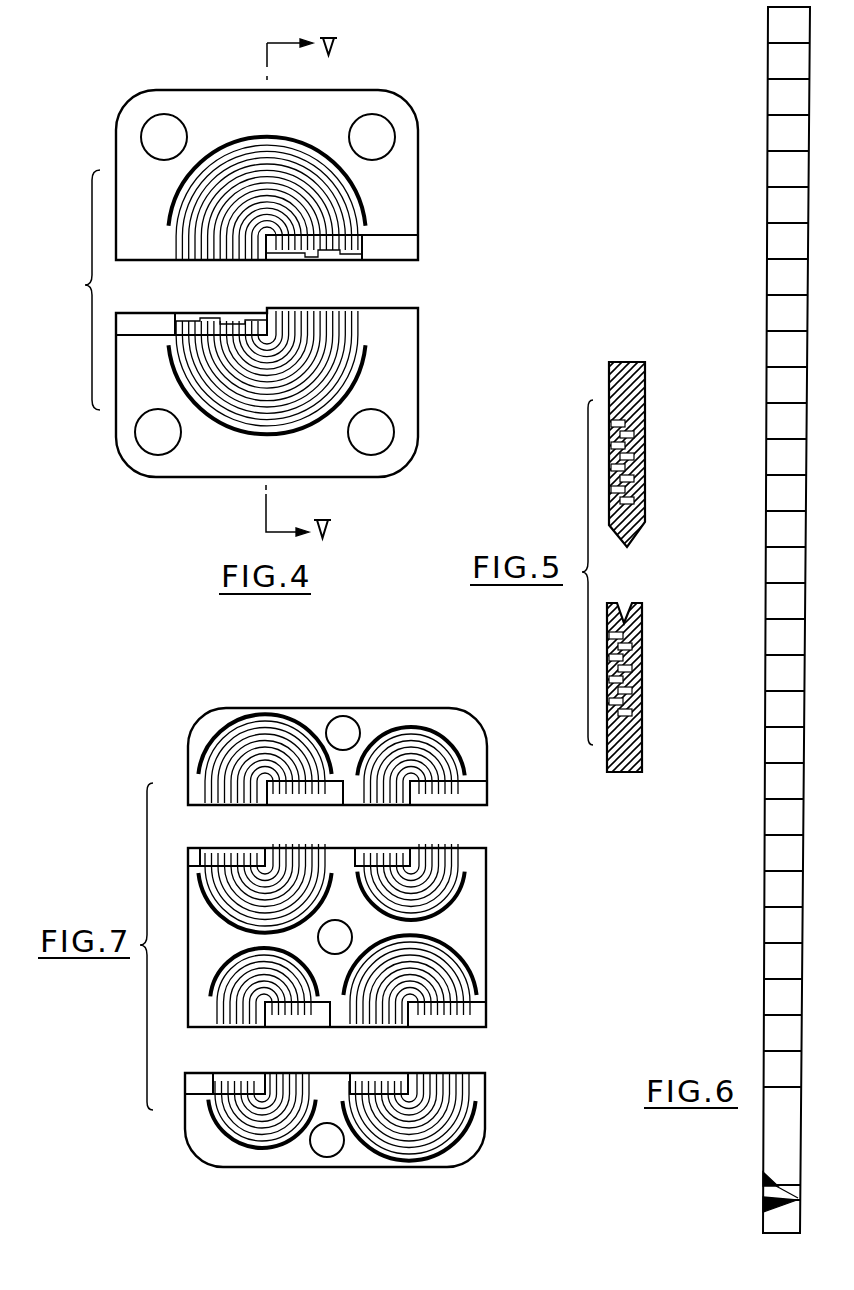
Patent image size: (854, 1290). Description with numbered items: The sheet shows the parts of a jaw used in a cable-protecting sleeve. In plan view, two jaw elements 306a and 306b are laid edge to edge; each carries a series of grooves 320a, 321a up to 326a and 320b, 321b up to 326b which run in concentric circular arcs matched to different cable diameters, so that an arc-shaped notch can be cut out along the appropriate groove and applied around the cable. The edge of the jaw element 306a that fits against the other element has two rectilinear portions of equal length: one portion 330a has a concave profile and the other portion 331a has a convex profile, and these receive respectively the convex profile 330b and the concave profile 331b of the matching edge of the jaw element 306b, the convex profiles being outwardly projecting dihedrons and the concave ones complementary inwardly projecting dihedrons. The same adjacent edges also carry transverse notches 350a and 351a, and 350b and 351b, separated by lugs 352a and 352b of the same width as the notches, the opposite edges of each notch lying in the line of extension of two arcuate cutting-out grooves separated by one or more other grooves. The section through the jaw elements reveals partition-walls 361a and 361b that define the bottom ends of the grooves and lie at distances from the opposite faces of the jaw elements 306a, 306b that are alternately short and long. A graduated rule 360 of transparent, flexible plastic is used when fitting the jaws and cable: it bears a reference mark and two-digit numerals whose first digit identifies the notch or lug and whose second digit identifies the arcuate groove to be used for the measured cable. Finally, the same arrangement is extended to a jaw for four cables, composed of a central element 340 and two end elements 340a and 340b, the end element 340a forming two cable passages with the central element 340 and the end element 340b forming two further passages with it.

In FIG. 4, the jaw element 306a is at (405, 177).
In FIG. 5, the jaw element 306a is at (633, 392).
In FIG. 4, the jaw element 306b is at (397, 374).
In FIG. 5, the jaw element 306b is at (642, 756).
In FIG. 4, the groove 320a is at (178, 260).
In FIG. 5, the groove 320a is at (636, 424).
In FIG. 4, the groove 320b is at (178, 308).
In FIG. 5, the groove 320b is at (641, 724).
In FIG. 4, the groove 321a is at (186, 262).
In FIG. 4, the groove 321b is at (187, 312).
In FIG. 4, the groove 326a is at (242, 262).
In FIG. 5, the groove 326a is at (642, 512).
In FIG. 4, the groove 326b is at (240, 325).
In FIG. 5, the groove 326b is at (642, 648).
In FIG. 4, the rectilinear portion with concave profile 330a is at (122, 265).
In FIG. 4, the convex profile 330b is at (122, 306).
In FIG. 4, the rectilinear portion with convex profile 331a is at (418, 235).
In FIG. 5, the rectilinear portion with convex profile 331a is at (636, 542).
In FIG. 4, the concave profile 331b is at (395, 308).
In FIG. 5, the concave profile 331b is at (622, 620).
In FIG. 4, the transverse notch 350a is at (375, 262).
In FIG. 4, the transverse notch 350b is at (183, 315).
In FIG. 4, the transverse notch 351a is at (370, 268).
In FIG. 4, the transverse notch 351b is at (222, 325).
In FIG. 4, the lug 352a is at (338, 235).
In FIG. 4, the lug 352b is at (200, 328).
In FIG. 5, the partition-wall 361a is at (609, 475).
In FIG. 5, the partition-wall 361b is at (641, 684).
In FIG. 7, the central element 340 is at (465, 931).
In FIG. 7, the end element 340a is at (466, 745).
In FIG. 7, the end element 340b is at (465, 1096).
In FIG. 6, the graduated rule 360 is at (757, 828).